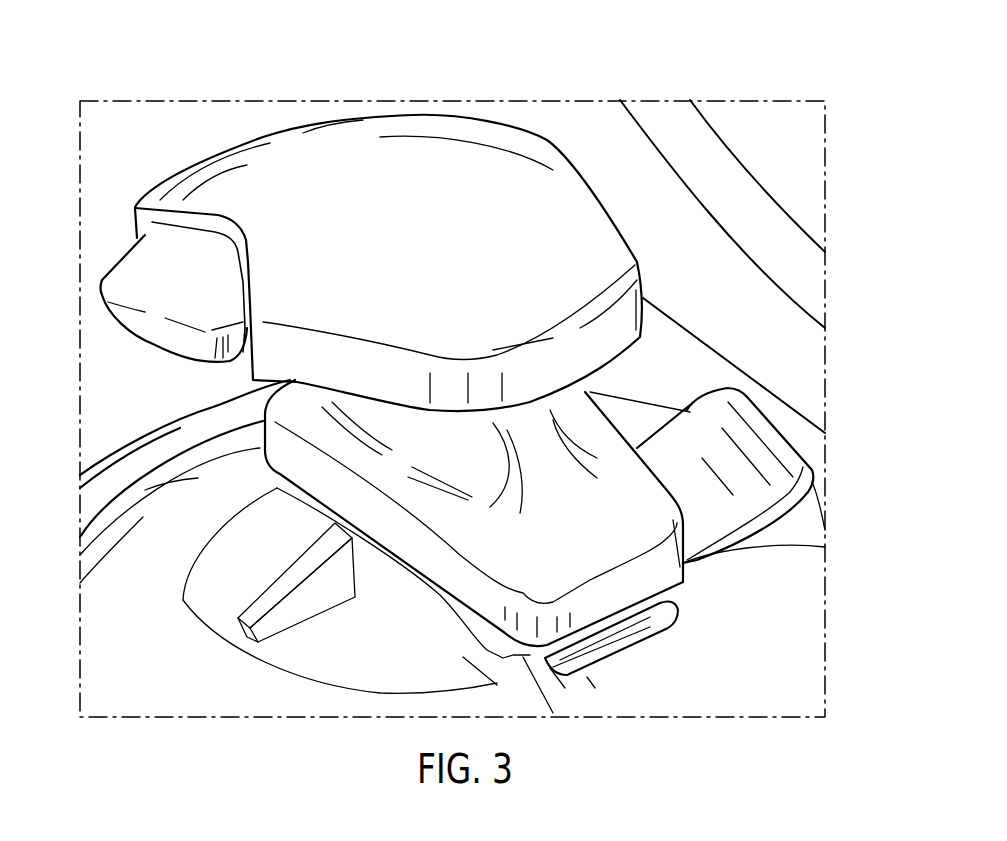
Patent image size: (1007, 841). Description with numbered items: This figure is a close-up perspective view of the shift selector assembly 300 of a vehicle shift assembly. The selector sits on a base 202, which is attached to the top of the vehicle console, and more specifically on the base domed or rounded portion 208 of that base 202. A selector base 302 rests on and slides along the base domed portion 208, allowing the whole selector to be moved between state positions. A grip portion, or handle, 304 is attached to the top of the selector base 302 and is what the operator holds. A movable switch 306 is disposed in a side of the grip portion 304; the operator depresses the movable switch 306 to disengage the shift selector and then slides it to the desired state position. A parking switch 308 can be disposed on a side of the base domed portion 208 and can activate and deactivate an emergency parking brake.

The shifter assembly 300 is at (247, 65).
The grip portion (handle) 304 is at (413, 130).
The movable switch 306 is at (111, 278).
The selector base 302 is at (643, 547).
The parking switch 308 is at (767, 460).
The base 202 is at (600, 637).
The base domed portion 208 is at (713, 670).